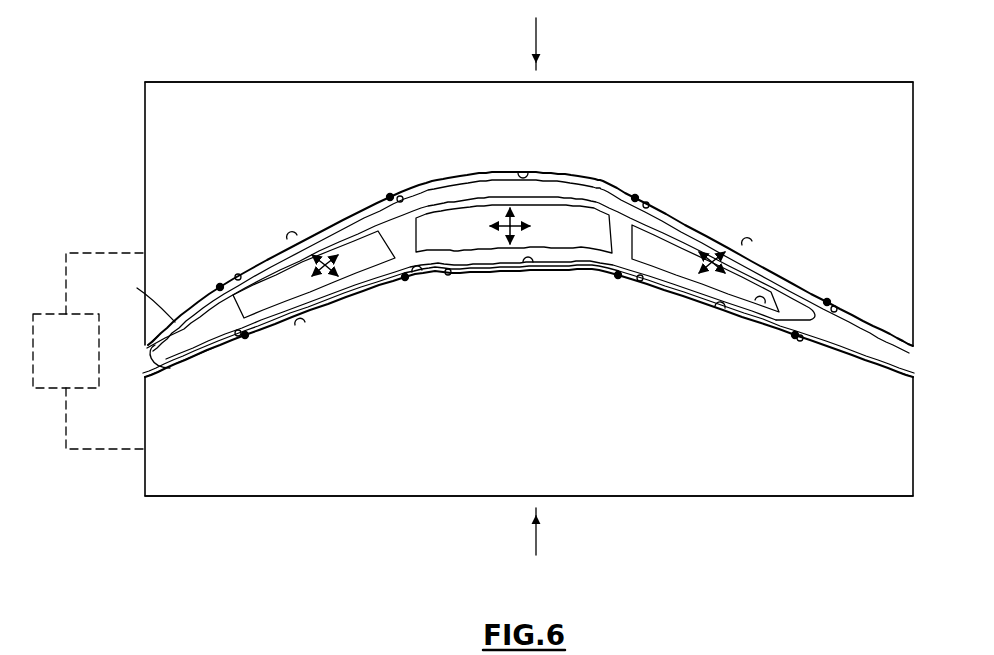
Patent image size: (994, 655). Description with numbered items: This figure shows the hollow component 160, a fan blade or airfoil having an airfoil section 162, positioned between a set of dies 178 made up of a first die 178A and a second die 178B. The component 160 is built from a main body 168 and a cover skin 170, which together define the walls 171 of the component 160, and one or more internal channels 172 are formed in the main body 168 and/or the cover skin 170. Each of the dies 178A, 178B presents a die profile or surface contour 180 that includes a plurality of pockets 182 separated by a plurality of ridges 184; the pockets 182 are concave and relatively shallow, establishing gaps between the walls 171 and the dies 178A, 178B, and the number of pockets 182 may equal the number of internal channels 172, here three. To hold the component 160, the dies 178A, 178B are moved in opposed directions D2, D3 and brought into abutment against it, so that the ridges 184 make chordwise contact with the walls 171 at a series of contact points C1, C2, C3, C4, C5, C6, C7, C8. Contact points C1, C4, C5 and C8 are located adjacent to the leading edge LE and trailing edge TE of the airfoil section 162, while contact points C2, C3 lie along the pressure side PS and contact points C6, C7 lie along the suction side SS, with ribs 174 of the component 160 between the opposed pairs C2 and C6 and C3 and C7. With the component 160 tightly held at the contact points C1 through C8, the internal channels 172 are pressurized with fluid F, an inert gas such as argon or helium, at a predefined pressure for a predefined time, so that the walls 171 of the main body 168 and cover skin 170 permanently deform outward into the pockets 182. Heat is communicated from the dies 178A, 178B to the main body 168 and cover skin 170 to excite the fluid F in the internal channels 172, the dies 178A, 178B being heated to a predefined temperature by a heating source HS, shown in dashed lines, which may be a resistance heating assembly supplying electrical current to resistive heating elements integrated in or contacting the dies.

The component 160 is at (528, 295).
The airfoil section 162 is at (216, 362).
The main body 168 is at (255, 342).
The cover skin 170 is at (215, 272).
The walls 171 is at (343, 224).
The internal channels 172 is at (322, 288).
The ribs 174 is at (420, 232).
The set of dies 178 is at (205, 80).
The first die 178A is at (288, 112).
The second die 178B is at (276, 474).
The surface contour 180 is at (130, 410).
The pockets 182 is at (292, 233).
The ridges 184 is at (399, 196).
The contact point C1 is at (219, 287).
The contact point C2 is at (389, 197).
The contact point C3 is at (636, 197).
The contact point C4 is at (828, 300).
The contact point C5 is at (247, 337).
The contact point C6 is at (406, 281).
The contact point C7 is at (617, 278).
The contact point C8 is at (795, 338).
The suction side SS is at (470, 182).
The pressure side PS is at (480, 277).
The leading edge LE is at (190, 350).
The trailing edge TE is at (842, 343).
The fluid F is at (330, 262).
The direction D2 is at (537, 32).
The direction D3 is at (537, 547).
The heating source HS is at (81, 365).